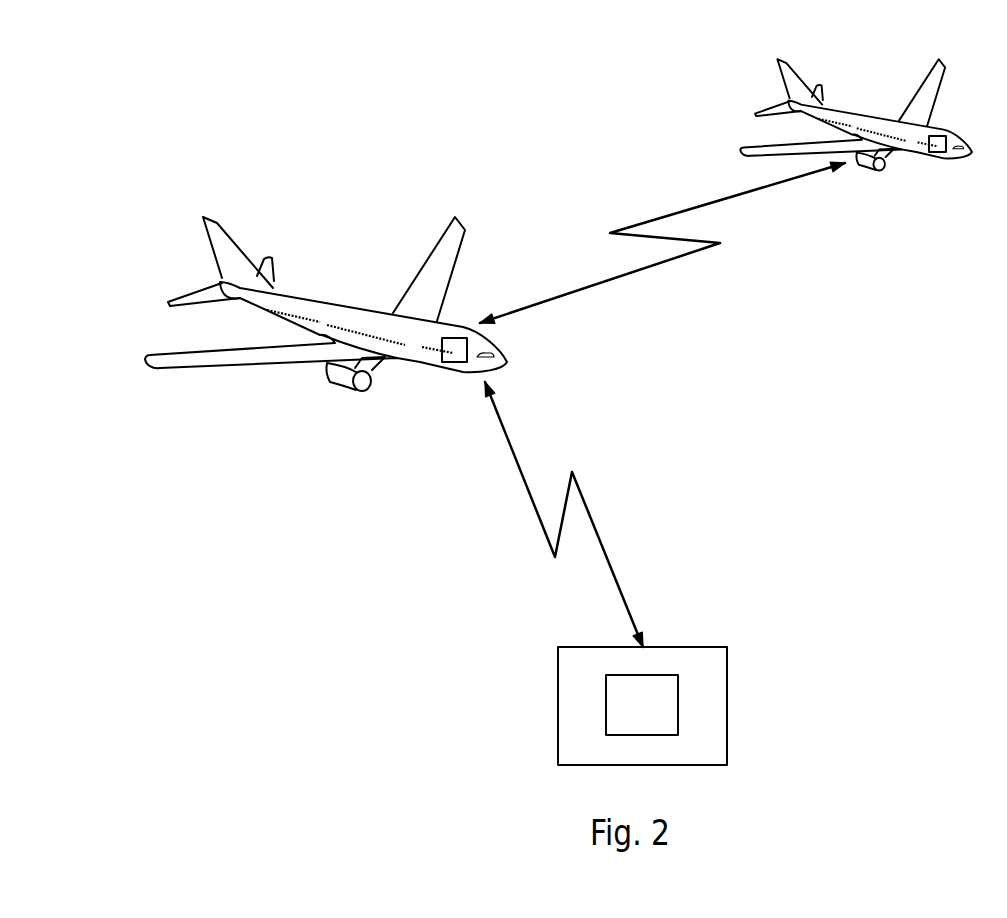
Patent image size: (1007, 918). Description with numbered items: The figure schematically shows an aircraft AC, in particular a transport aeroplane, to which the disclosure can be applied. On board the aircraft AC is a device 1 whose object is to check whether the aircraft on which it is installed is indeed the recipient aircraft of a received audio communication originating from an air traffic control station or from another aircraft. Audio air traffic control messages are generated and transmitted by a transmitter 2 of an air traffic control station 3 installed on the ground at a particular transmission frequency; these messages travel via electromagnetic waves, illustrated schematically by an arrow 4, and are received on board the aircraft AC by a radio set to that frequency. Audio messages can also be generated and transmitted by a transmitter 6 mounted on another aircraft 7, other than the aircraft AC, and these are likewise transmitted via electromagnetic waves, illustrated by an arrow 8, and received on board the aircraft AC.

The aircraft AC is at (326, 340).
The device 1 is at (455, 362).
The aircraft 7 is at (856, 136).
The transmitter 6 is at (938, 152).
The arrow 8 is at (680, 258).
The arrow 4 is at (592, 513).
The air traffic control station 3 is at (652, 706).
The transmitter 2 is at (606, 710).